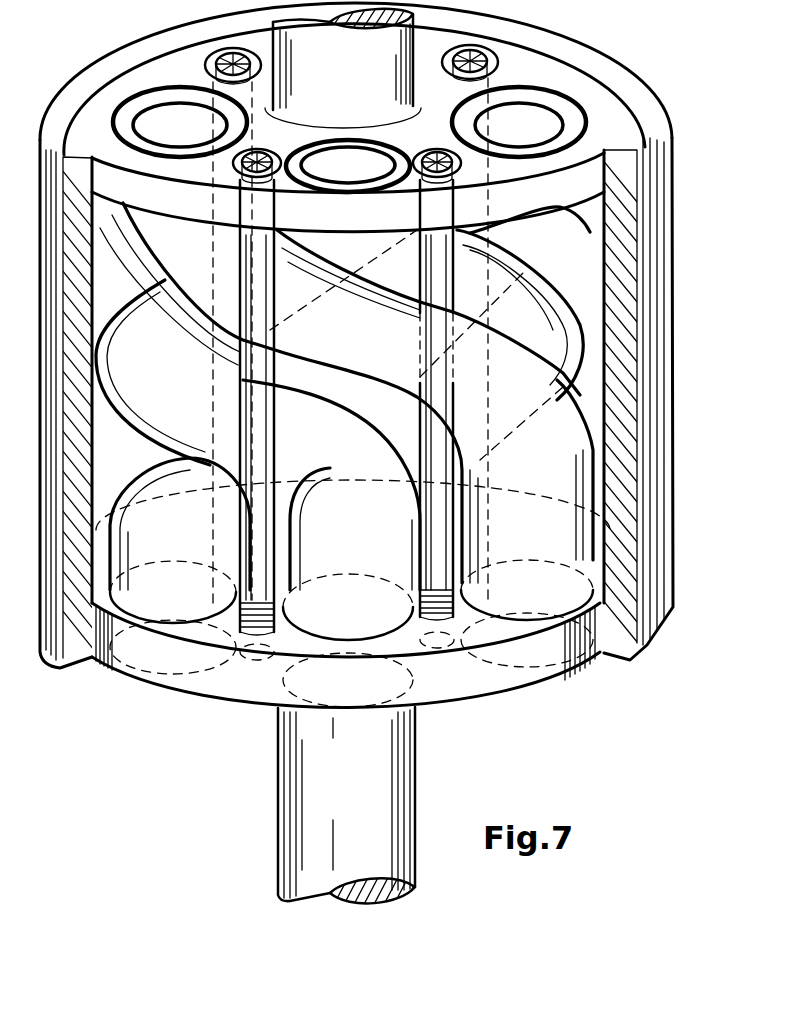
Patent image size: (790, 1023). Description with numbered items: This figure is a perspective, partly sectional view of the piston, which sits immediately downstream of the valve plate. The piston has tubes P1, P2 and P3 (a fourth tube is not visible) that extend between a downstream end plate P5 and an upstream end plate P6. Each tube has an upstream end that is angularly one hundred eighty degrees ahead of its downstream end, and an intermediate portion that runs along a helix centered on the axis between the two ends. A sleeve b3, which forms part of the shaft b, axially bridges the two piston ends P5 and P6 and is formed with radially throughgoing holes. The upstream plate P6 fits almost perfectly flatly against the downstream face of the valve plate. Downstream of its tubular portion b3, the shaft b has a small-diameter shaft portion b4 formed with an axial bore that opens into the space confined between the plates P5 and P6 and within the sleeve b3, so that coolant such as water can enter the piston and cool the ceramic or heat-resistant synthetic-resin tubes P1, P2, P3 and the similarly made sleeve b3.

The tube P1 is at (188, 142).
The tube P2 is at (532, 142).
The tube P3 is at (363, 176).
The downstream end plate P5 is at (215, 683).
The upstream end plate P6 is at (595, 175).
The shaft b is at (348, 82).
The sleeve b3 is at (657, 503).
The small-diameter shaft portion b4 is at (364, 790).